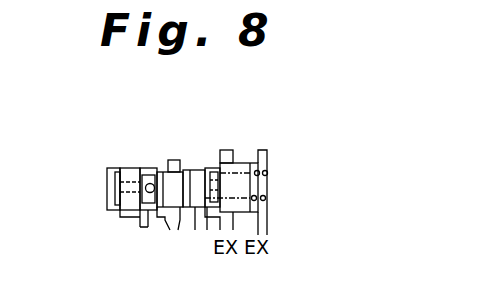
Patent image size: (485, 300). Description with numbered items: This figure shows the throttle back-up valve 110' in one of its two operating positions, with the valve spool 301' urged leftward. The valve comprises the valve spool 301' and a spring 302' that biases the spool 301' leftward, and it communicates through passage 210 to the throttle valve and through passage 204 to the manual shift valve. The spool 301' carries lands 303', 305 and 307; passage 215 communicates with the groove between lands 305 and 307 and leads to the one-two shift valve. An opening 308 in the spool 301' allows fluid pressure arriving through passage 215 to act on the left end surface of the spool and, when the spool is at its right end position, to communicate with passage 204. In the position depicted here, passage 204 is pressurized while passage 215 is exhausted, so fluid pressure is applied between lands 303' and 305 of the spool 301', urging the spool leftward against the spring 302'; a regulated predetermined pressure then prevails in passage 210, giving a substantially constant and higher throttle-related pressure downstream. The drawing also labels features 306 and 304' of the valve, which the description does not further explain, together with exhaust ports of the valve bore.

The throttle back-up valve 110' is at (84, 185).
The land 307 is at (130, 167).
The passage 215 is at (145, 167).
The land 305 is at (159, 171).
The valve spool 301' is at (194, 150).
The passage 210 is at (196, 169).
The land 303' is at (247, 165).
The spring 302' is at (291, 192).
The opening 308 is at (133, 207).
The port 306 is at (150, 213).
The passage 204 is at (177, 236).
The exhaust port 304' is at (206, 250).